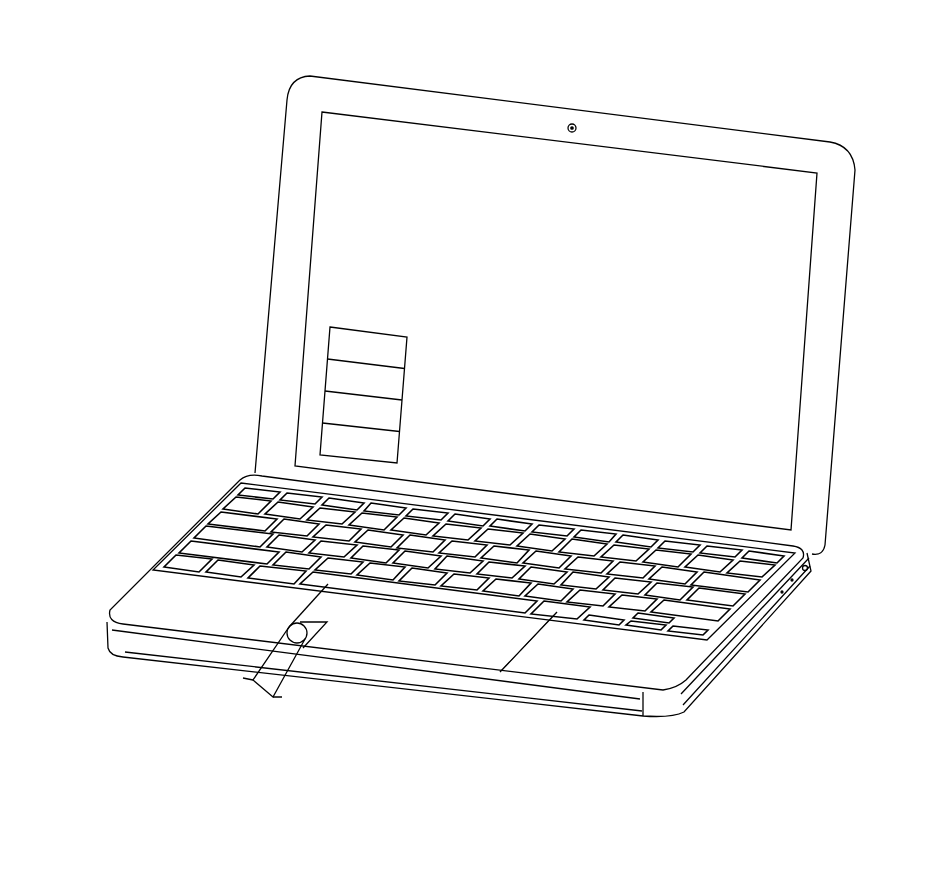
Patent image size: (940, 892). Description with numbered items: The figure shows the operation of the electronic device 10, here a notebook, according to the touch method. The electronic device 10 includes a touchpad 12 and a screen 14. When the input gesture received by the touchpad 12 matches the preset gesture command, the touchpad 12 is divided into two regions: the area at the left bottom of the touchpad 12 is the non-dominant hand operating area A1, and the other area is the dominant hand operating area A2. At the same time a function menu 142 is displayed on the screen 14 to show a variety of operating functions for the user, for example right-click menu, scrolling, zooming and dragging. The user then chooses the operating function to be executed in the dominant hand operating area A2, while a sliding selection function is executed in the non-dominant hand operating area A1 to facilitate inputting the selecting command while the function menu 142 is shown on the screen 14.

The electronic device 10 is at (188, 150).
The touchpad 12 is at (523, 650).
The screen 14 is at (853, 290).
The function menu 142 is at (323, 406).
The non-dominant hand operating area A1 is at (281, 622).
The dominant hand operating area A2 is at (386, 645).